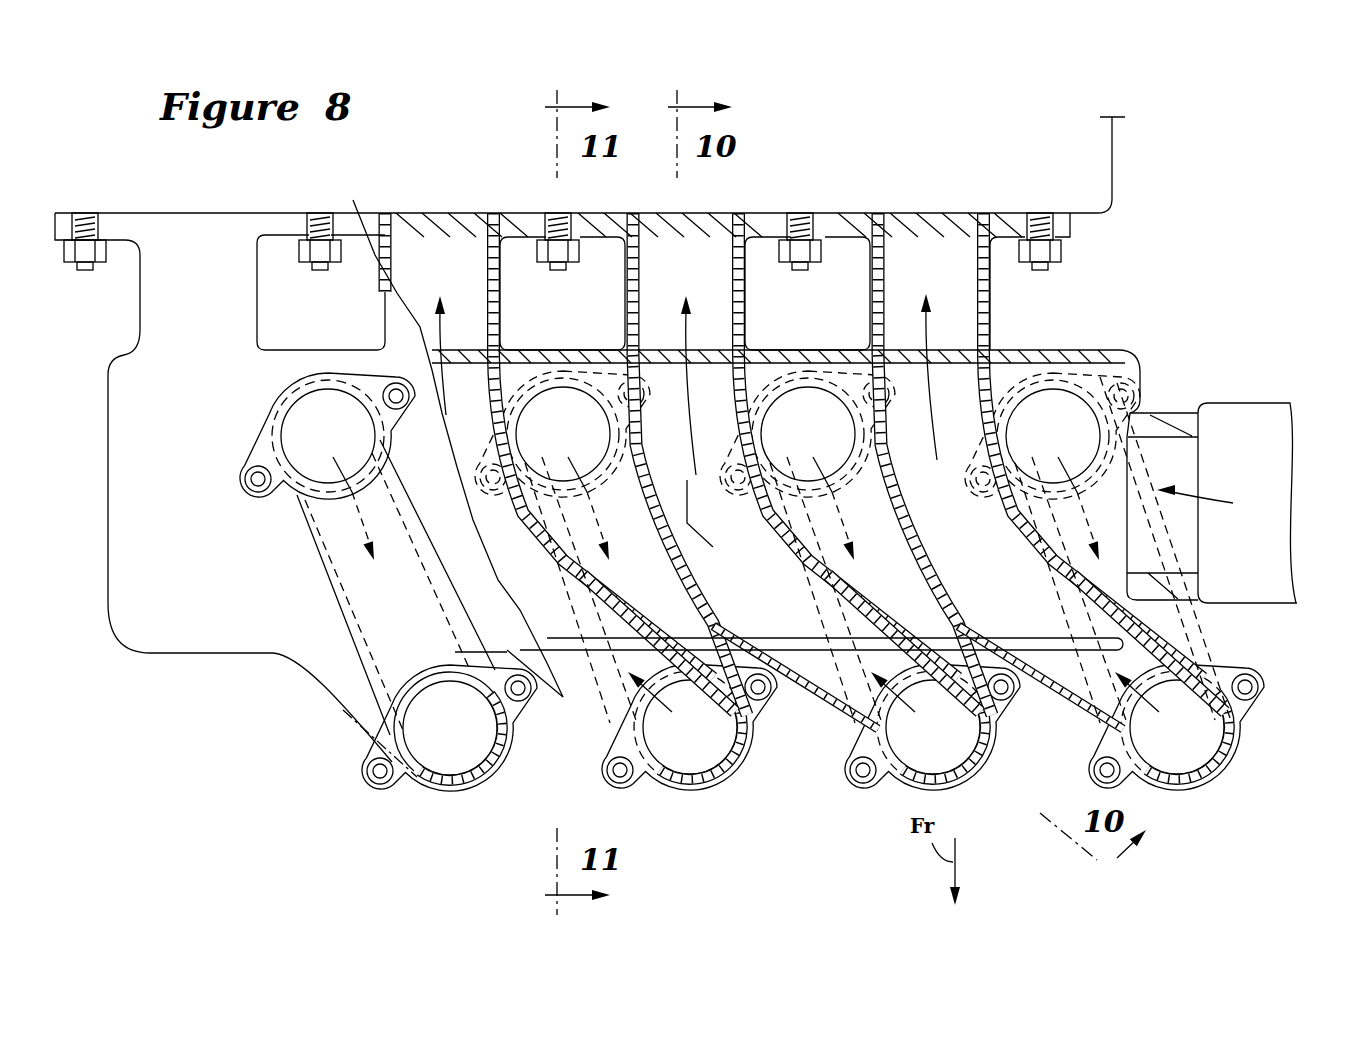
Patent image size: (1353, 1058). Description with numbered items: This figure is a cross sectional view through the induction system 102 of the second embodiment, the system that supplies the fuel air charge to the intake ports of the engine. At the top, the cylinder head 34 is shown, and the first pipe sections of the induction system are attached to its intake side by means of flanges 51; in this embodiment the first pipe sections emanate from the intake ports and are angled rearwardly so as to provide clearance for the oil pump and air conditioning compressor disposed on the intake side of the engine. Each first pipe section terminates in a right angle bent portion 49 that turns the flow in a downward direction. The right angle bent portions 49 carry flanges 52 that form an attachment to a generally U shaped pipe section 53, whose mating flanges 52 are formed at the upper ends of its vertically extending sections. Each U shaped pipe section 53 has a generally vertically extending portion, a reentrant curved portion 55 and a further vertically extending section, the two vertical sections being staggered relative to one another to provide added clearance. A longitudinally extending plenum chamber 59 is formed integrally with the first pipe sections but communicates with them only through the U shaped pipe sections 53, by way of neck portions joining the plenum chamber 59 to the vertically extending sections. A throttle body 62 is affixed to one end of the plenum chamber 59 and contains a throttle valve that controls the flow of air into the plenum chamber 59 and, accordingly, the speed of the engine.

The cylinder head 34 is at (1112, 165).
The right angle bent portions 49 is at (568, 717).
The flanges 51 is at (850, 213).
The flanges 52 is at (1097, 380).
The U shaped pipe section 53 is at (330, 629).
The reentrant curved portion 55 is at (387, 660).
The plenum chamber 59 is at (1027, 348).
The throttle body 62 is at (1253, 597).
The induction system 102 is at (772, 826).